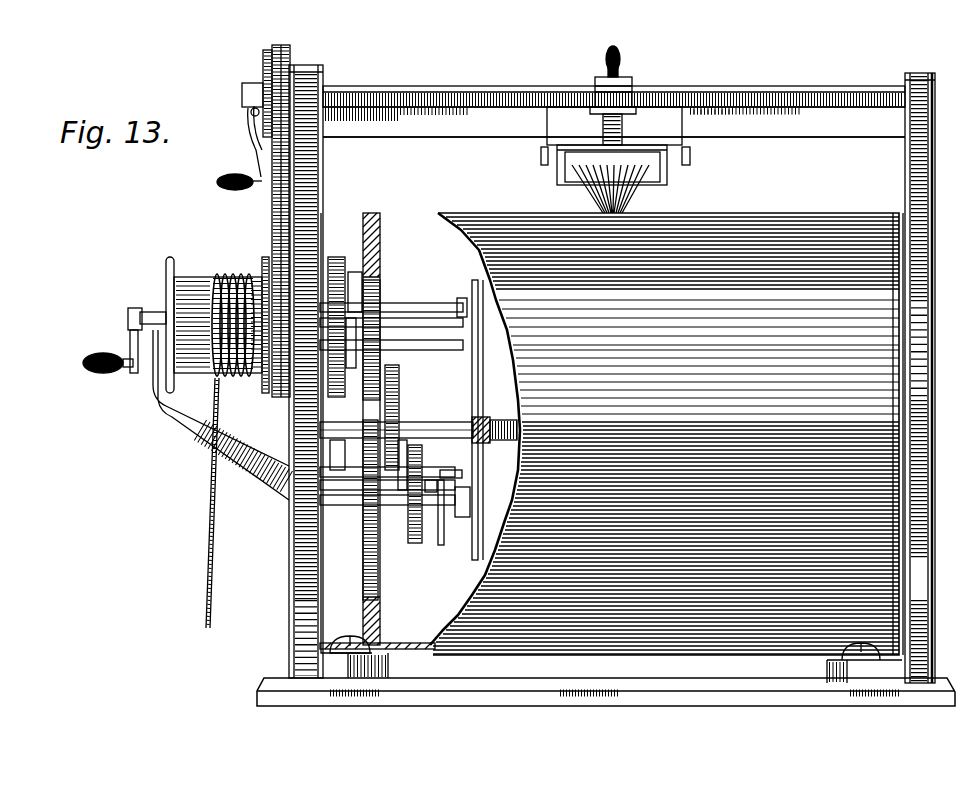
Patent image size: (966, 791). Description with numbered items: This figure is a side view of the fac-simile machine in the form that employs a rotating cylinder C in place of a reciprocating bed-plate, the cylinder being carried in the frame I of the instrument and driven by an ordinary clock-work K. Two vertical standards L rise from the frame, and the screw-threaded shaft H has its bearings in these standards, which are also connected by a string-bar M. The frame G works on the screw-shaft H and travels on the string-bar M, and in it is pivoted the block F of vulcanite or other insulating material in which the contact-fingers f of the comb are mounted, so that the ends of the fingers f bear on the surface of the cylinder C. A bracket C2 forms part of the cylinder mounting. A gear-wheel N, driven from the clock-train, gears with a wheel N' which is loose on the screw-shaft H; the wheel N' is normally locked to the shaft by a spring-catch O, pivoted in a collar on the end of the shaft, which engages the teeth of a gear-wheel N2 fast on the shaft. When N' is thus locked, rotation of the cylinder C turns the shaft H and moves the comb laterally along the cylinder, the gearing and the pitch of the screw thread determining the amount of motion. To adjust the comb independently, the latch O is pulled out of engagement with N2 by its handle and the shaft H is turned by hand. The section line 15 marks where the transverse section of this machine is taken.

The section line 15 is at (329, 212).
The frame I is at (288, 527).
The screw-threaded shaft H is at (488, 94).
The string-bar M is at (488, 124).
The vertical standards L is at (326, 160).
The frame G is at (615, 105).
The block F is at (670, 182).
The fingers f is at (638, 206).
The cylinder C is at (666, 434).
The cylinder bracket C2 is at (381, 252).
The clock-work K is at (395, 428).
The wheel N' is at (291, 199).
The gear-wheel N2 is at (263, 67).
The spring-catch O is at (250, 150).
The gear-wheel N is at (256, 297).